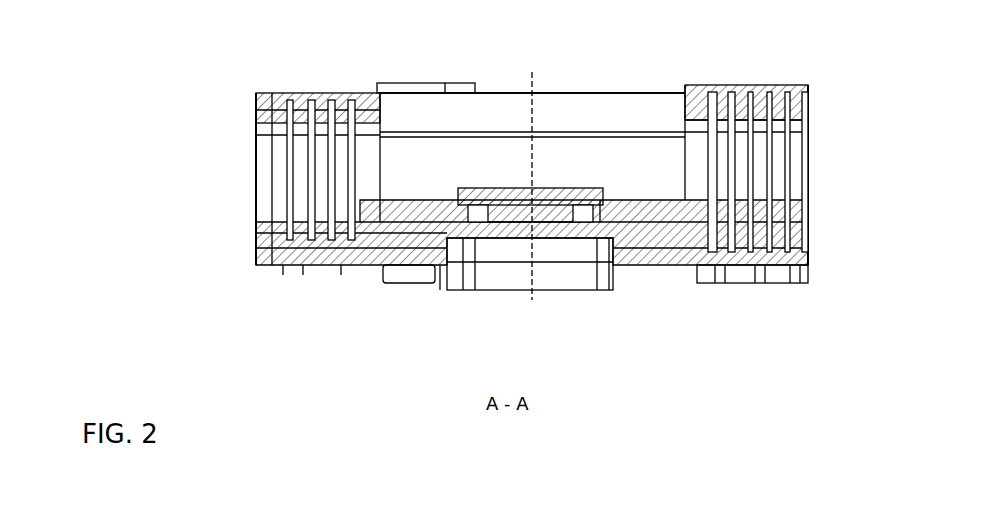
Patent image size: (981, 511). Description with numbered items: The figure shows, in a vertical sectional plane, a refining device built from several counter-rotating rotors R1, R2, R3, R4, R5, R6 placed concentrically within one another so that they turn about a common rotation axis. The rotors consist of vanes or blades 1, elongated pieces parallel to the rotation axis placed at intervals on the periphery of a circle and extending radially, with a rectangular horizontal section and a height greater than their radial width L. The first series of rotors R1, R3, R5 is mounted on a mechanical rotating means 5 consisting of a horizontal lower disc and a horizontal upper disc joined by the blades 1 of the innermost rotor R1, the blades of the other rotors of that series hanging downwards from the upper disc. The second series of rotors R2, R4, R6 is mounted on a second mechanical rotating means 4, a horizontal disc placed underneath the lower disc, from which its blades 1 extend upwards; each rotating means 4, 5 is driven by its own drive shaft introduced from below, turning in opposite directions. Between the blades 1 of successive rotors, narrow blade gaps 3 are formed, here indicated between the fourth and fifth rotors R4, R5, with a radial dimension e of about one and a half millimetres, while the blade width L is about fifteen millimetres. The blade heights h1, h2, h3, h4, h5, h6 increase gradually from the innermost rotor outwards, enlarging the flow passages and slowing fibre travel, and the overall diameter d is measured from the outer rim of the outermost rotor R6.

The vanes or blades 1 is at (698, 170).
The blade gaps 3 is at (808, 186).
The mechanical rotating means 4 is at (628, 236).
The mechanical rotating means 5 is at (340, 92).
The height of rotor blades h1 is at (232, 133).
The height of rotor blades h2 is at (256, 133).
The height of rotor blades h3 is at (256, 222).
The height of rotor blades h4 is at (256, 122).
The height of rotor blades h5 is at (256, 112).
The height of rotor blades h6 is at (256, 108).
The diameter of the device d is at (808, 286).
The width of the blades L is at (935, 134).
The dimension of the blade gap e is at (935, 176).
The rotor R1 is at (697, 66).
The rotor R2 is at (720, 286).
The rotor R3 is at (738, 66).
The rotor R4 is at (760, 286).
The rotor R5 is at (777, 66).
The rotor R6 is at (796, 286).